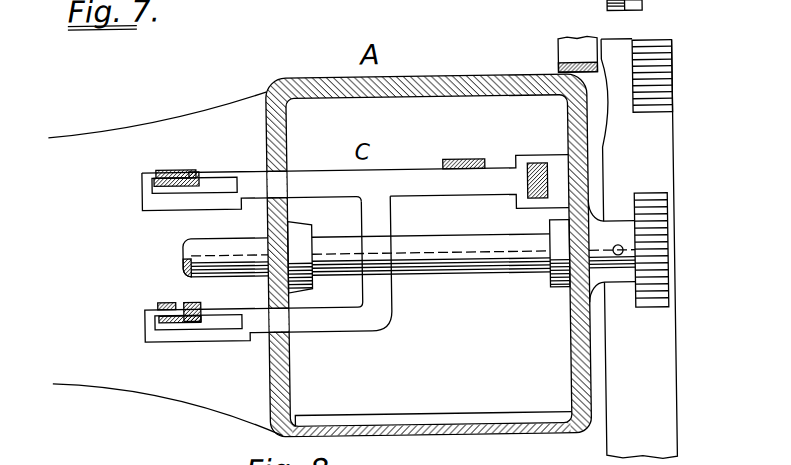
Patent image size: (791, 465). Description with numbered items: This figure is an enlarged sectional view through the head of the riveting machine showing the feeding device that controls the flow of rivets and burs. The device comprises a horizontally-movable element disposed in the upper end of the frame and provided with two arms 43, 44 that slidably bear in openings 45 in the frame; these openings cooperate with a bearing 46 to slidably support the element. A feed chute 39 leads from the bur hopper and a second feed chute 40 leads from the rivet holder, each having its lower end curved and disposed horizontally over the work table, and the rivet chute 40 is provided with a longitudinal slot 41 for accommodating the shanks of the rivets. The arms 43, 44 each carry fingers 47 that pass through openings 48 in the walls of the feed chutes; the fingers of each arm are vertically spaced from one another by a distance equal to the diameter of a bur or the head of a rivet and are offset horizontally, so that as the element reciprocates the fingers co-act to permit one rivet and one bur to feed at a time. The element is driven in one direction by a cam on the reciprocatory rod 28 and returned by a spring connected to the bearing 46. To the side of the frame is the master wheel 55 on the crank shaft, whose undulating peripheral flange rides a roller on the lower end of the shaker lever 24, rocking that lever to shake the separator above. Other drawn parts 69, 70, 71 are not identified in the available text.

The lever 24 is at (570, 54).
The ratchet wheel 71 is at (662, 73).
The master wheel 55 is at (658, 149).
The gear wheel 70 is at (655, 232).
The bearing 46 is at (461, 158).
The reciprocatory rod 28 is at (539, 162).
The arm 44 is at (309, 177).
The arm 43 is at (339, 322).
The openings 45 is at (269, 167).
The openings 48 is at (153, 170).
The feed tube or chute 39 is at (173, 167).
The fingers 47 is at (208, 170).
The shaft 69 is at (477, 266).
The longitudinal slot 41 is at (181, 300).
The feed tube or chute 40 is at (179, 320).